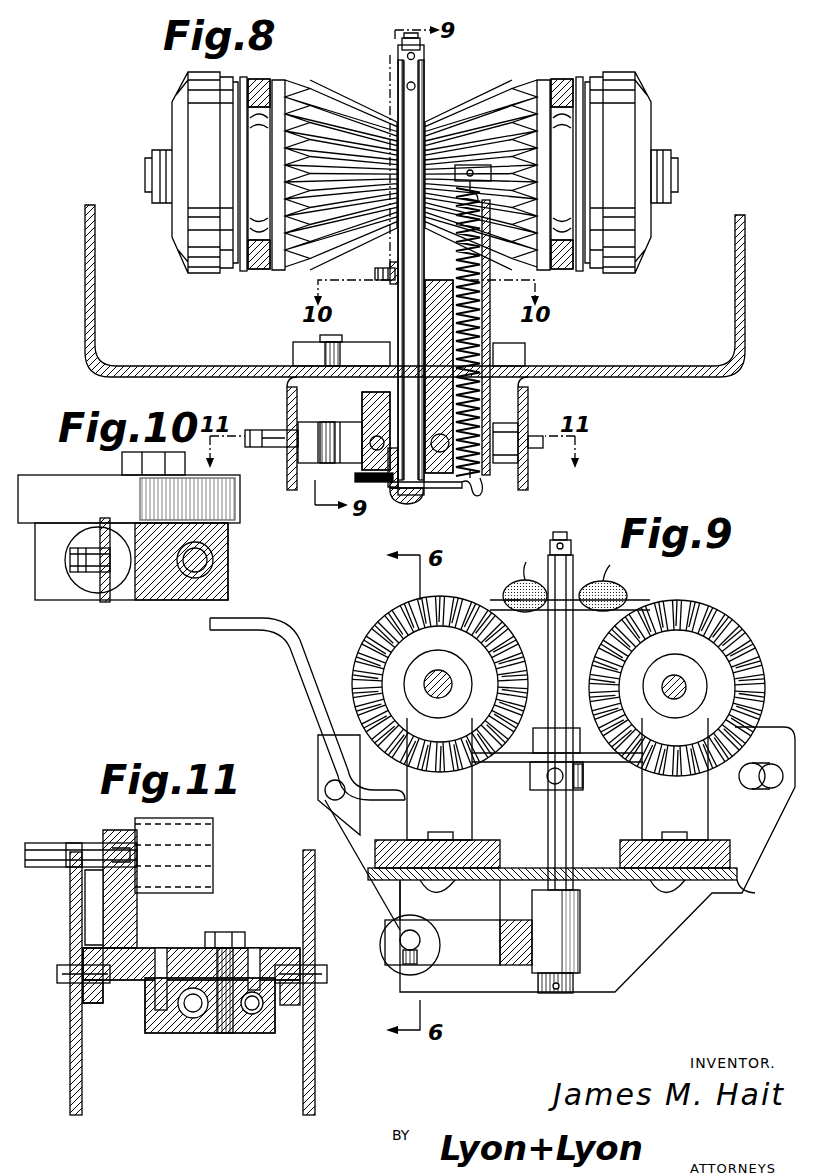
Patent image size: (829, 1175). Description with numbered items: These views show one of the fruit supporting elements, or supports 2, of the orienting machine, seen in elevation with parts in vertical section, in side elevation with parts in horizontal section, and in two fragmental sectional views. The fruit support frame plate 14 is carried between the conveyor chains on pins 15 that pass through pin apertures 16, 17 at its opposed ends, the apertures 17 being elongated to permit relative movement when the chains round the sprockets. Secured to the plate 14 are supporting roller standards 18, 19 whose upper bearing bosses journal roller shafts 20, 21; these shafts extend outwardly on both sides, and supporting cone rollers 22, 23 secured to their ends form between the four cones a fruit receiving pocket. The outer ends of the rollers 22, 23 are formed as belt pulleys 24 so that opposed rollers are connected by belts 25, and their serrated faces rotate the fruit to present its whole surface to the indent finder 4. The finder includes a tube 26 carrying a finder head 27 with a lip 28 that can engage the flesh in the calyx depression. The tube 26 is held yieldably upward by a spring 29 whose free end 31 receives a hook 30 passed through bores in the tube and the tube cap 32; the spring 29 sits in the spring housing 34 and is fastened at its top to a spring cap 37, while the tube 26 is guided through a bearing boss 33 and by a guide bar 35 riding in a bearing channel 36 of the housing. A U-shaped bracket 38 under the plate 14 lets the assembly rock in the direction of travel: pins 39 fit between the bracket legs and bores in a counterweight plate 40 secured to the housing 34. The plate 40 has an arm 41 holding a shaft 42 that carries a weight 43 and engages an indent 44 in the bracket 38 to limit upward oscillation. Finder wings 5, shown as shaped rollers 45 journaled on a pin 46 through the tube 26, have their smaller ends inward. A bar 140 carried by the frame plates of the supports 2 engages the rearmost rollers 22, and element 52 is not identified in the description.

In FIG. 8, the supports 2 is at (652, 98).
In FIG. 8, the indent finder 4 is at (420, 50).
In FIG. 9, the indent finder 4 is at (565, 540).
In FIG. 9, the finder wings 5 is at (568, 562).
In FIG. 8, the fruit support frame plate 14 is at (675, 378).
In FIG. 9, the fruit support frame plate 14 is at (754, 891).
In FIG. 9, the pin 15 is at (775, 800).
In FIG. 9, the pin aperture 16 is at (325, 790).
In FIG. 9, the pin aperture 17 is at (755, 768).
In FIG. 9, the supporting roller standard 18 is at (450, 820).
In FIG. 9, the supporting roller standard 19 is at (660, 810).
In FIG. 9, the roller shaft 20 is at (405, 660).
In FIG. 9, the roller shaft 21 is at (685, 685).
In FIG. 8, the supporting cone roller 22 is at (514, 88).
In FIG. 8, the supporting cone roller 23 is at (362, 82).
In FIG. 9, the supporting cone roller 23 is at (400, 602).
In FIG. 8, the belt pulley 24 is at (244, 272).
In FIG. 8, the belt 25 is at (259, 79).
In FIG. 8, the tube 26 is at (425, 100).
In FIG. 10, the tube 26 is at (95, 580).
In FIG. 11, the tube 26 is at (193, 1018).
In FIG. 9, the tube 26 is at (573, 572).
In FIG. 8, the finder head 27 is at (404, 34).
In FIG. 9, the finder head 27 is at (556, 532).
In FIG. 8, the lip 28 is at (407, 56).
In FIG. 9, the lip 28 is at (551, 550).
In FIG. 8, the spring 29 is at (490, 330).
In FIG. 10, the spring 29 is at (214, 560).
In FIG. 11, the spring 29 is at (247, 1014).
In FIG. 8, the hook 30 is at (450, 489).
In FIG. 8, the free end 31 is at (480, 495).
In FIG. 8, the tube cap 32 is at (407, 504).
In FIG. 9, the tube cap 32 is at (548, 993).
In FIG. 8, the bearing boss 33 is at (390, 272).
In FIG. 8, the spring housing 34 is at (425, 300).
In FIG. 10, the spring housing 34 is at (170, 592).
In FIG. 11, the spring housing 34 is at (258, 1033).
In FIG. 9, the spring housing 34 is at (578, 950).
In FIG. 8, the guide bar 35 is at (390, 482).
In FIG. 8, the bearing channel 36 is at (362, 412).
In FIG. 8, the spring cap 37 is at (470, 165).
In FIG. 8, the U-shaped bracket 38 is at (528, 395).
In FIG. 11, the U-shaped bracket 38 is at (82, 1095).
In FIG. 8, the pin 39 is at (543, 447).
In FIG. 11, the pin 39 is at (65, 965).
In FIG. 9, the pin 39 is at (520, 920).
In FIG. 8, the counterweight plate 40 is at (330, 463).
In FIG. 10, the counterweight plate 40 is at (80, 482).
In FIG. 11, the counterweight plate 40 is at (285, 950).
In FIG. 9, the counterweight plate 40 is at (480, 960).
In FIG. 11, the arm 41 is at (128, 912).
In FIG. 8, the shaft 42 is at (268, 448).
In FIG. 11, the shaft 42 is at (90, 846).
In FIG. 9, the shaft 42 is at (420, 940).
In FIG. 11, the weight 43 is at (213, 838).
In FIG. 9, the weight 43 is at (383, 928).
In FIG. 11, the indent 44 is at (70, 868).
In FIG. 9, the shaped roller 45 is at (503, 590).
In FIG. 9, the pin 46 is at (505, 600).
In FIG. 8, the drum 52 is at (205, 274).
In FIG. 9, the bar 140 is at (280, 632).